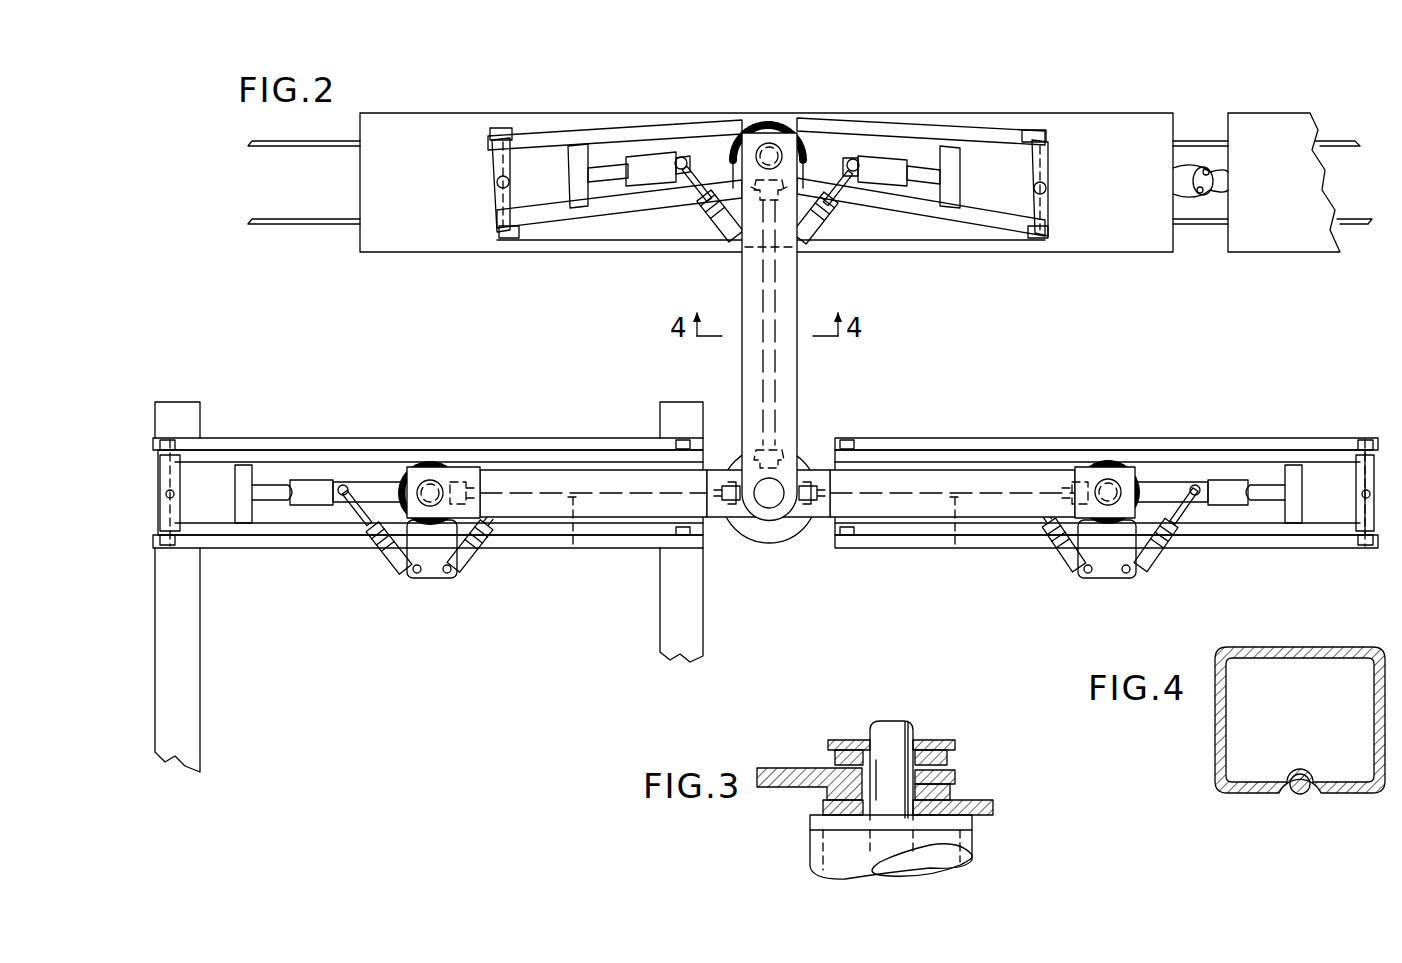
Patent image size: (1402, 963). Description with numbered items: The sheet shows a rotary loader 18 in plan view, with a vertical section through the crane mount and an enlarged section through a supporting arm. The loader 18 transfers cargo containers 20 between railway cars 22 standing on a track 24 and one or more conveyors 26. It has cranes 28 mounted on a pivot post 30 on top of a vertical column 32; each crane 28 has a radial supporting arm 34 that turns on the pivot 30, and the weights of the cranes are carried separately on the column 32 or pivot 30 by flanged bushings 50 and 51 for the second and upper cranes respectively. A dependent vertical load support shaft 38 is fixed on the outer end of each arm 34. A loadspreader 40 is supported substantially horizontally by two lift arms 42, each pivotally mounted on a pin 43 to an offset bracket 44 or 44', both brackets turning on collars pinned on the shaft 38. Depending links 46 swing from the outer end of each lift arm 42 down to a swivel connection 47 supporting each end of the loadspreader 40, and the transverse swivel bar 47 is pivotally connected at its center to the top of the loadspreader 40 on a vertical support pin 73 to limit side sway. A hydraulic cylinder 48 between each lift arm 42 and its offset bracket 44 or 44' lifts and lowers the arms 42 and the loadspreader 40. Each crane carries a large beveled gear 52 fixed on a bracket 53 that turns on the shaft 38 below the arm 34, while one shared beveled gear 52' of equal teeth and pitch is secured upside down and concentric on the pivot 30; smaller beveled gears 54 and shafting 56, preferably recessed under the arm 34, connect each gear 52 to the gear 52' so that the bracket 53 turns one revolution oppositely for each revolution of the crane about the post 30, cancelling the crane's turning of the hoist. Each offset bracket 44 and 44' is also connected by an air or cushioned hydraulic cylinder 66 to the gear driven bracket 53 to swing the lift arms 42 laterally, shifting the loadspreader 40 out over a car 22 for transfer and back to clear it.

In FIG. 2, the rotary loader 18 is at (318, 332).
In FIG. 2, the cargo container 20 is at (548, 252).
In FIG. 2, the railway car 22 is at (373, 252).
In FIG. 2, the track 24 is at (291, 219).
In FIG. 2, the conveyor 26 is at (200, 656).
In FIG. 2, the crane 28 is at (803, 363).
In FIG. 2, the pivot post 30 is at (772, 510).
In FIG. 3, the pivot post 30 is at (913, 728).
In FIG. 2, the vertical column 32 is at (805, 545).
In FIG. 3, the vertical column 32 is at (972, 851).
In FIG. 2, the radial supporting arm 34 is at (742, 368).
In FIG. 3, the radial supporting arm 34 is at (828, 745).
In FIG. 4, the radial supporting arm 34 is at (1215, 741).
In FIG. 2, the vertical load support shaft 38 is at (778, 152).
In FIG. 2, the loadspreader 40 is at (955, 240).
In FIG. 2, the lift arm 42 is at (540, 140).
In FIG. 2, the pin 43 is at (738, 116).
In FIG. 2, the offset bracket 44 is at (854, 105).
In FIG. 2, the offset bracket 44' is at (685, 98).
In FIG. 2, the depending link 46 is at (488, 134).
In FIG. 2, the swivel connection 47 is at (990, 137).
In FIG. 2, the hydraulic cylinder 48 is at (646, 157).
In FIG. 3, the flanged bushing 50 is at (952, 791).
In FIG. 3, the flanged bushing 51 is at (955, 766).
In FIG. 2, the beveled gear 52 is at (769, 296).
In FIG. 2, the beveled gear 52' is at (748, 561).
In FIG. 2, the bracket 53 is at (426, 578).
In FIG. 2, the smaller beveled gear 54 is at (462, 487).
In FIG. 2, the shafting 56 is at (780, 333).
In FIG. 4, the shafting 56 is at (1302, 795).
In FIG. 2, the cylinder 66 is at (718, 226).
In FIG. 2, the vertical support pin 73 is at (174, 496).